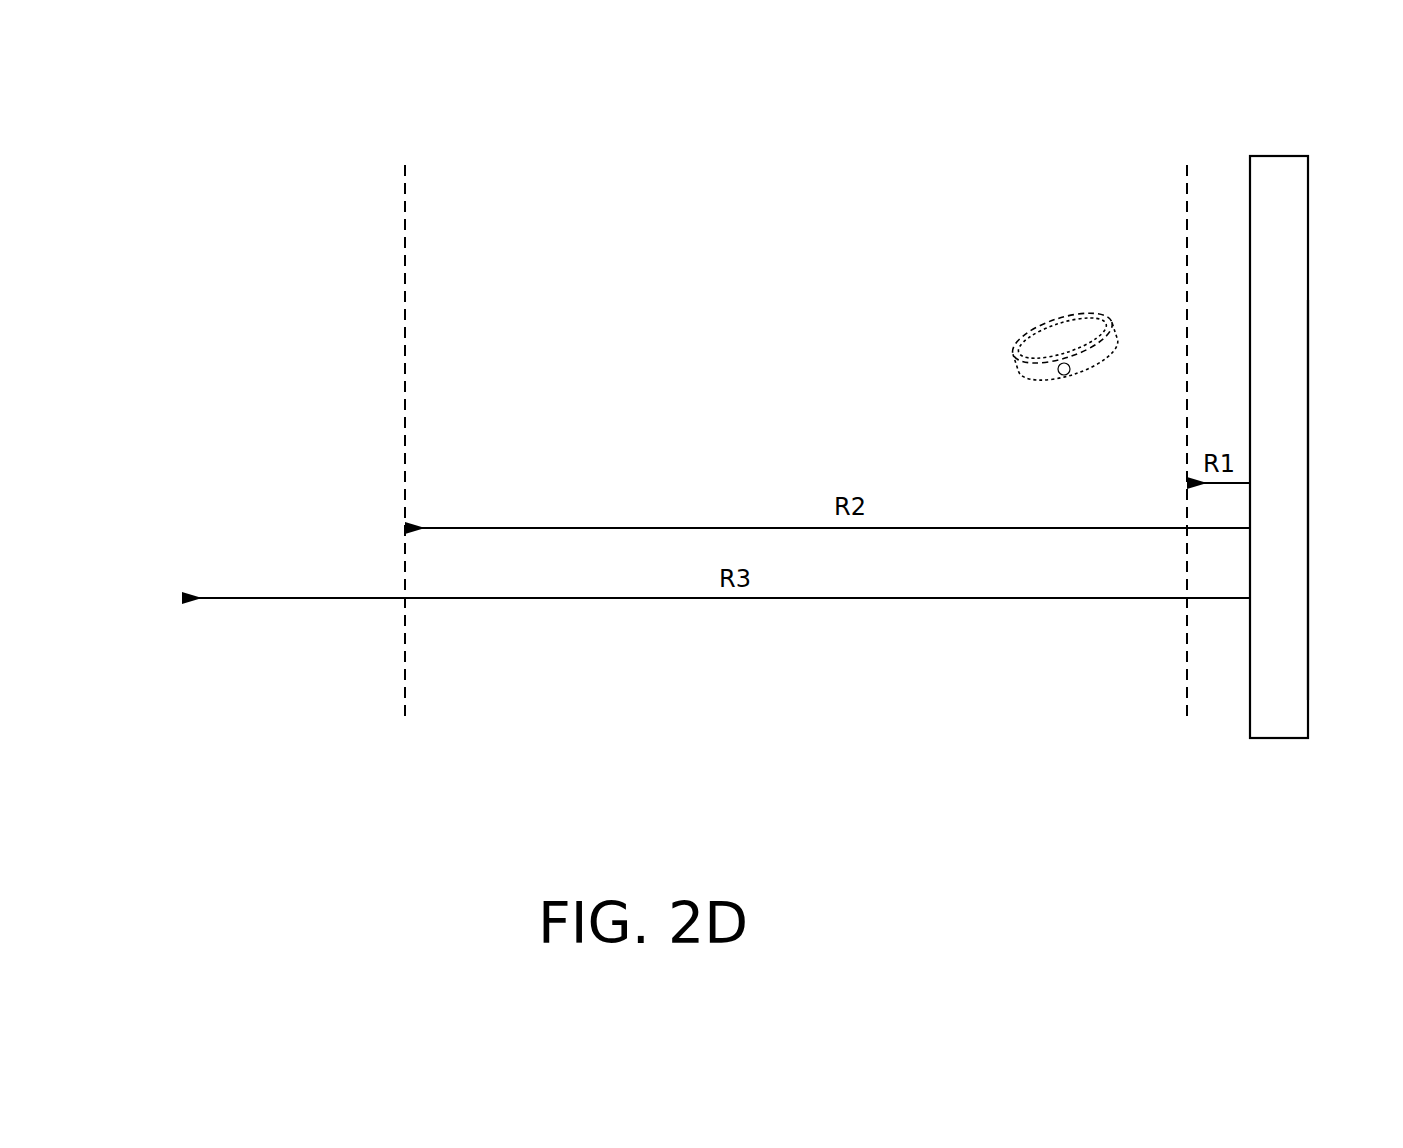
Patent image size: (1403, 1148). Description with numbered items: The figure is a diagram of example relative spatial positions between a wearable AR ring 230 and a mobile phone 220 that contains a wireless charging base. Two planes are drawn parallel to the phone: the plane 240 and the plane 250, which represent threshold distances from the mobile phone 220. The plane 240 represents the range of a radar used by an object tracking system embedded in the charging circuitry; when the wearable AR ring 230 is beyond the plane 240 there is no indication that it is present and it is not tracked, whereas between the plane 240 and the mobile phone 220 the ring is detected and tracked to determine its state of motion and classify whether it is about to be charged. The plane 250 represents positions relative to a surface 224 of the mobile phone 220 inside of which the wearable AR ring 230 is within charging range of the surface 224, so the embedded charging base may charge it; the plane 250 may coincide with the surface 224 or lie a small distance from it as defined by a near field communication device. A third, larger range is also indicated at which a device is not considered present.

The mobile phone 220 is at (1272, 146).
The surface 224 is at (1305, 642).
The wearable AR ring 230 is at (1038, 315).
The plane 240 is at (405, 194).
The plane 250 is at (1187, 198).